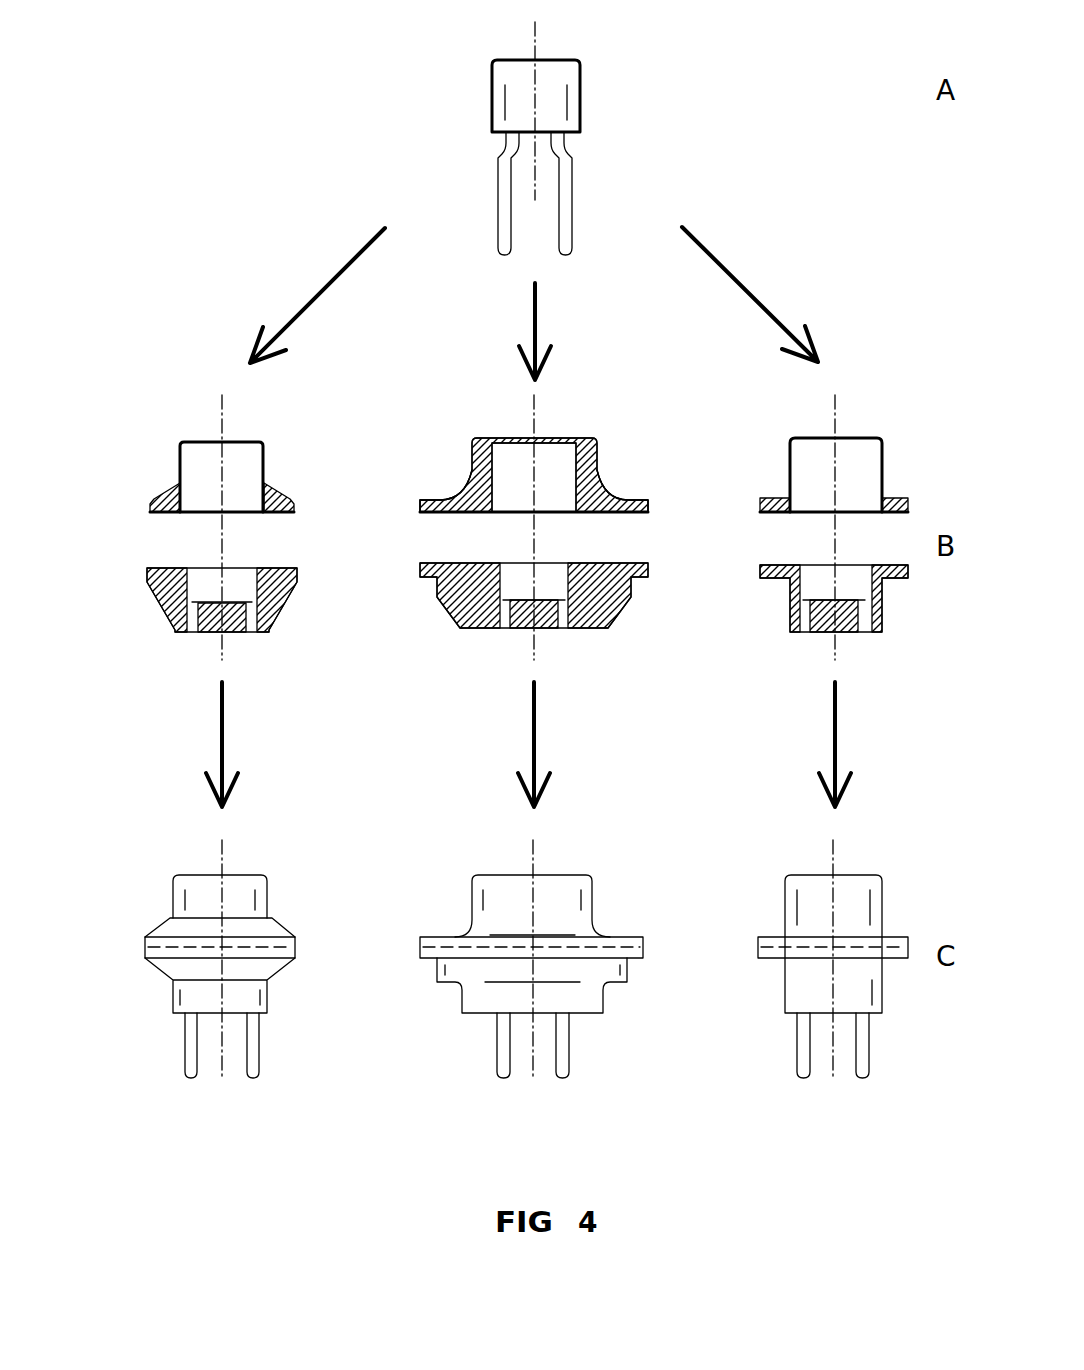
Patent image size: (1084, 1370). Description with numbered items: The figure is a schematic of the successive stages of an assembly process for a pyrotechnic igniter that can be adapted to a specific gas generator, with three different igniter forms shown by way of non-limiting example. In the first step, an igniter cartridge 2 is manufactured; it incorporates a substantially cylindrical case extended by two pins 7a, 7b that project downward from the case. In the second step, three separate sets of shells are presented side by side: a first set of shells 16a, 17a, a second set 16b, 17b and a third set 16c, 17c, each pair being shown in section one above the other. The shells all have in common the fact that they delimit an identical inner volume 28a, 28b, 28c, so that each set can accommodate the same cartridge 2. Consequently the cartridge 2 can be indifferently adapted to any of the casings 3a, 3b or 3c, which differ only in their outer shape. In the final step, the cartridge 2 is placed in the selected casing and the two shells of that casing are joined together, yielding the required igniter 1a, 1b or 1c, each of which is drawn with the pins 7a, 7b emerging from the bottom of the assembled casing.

The igniter cartridge 2 is at (563, 167).
The first lead 7a is at (500, 230).
The second lead 7b is at (567, 230).
The casing 3a is at (225, 553).
The casing 3b is at (524, 553).
The casing 3c is at (831, 553).
The shell 17a is at (172, 490).
The shell 17b is at (465, 497).
The shell 17c is at (790, 497).
The inner volume 28a is at (235, 445).
The inner volume 28b is at (546, 445).
The inner volume 28c is at (846, 445).
The shell 16a is at (168, 600).
The shell 16b is at (470, 622).
The shell 16c is at (788, 605).
The pyrotechnic igniter 1a is at (153, 1037).
The pyrotechnic igniter 1b is at (447, 1037).
The pyrotechnic igniter 1c is at (772, 1037).